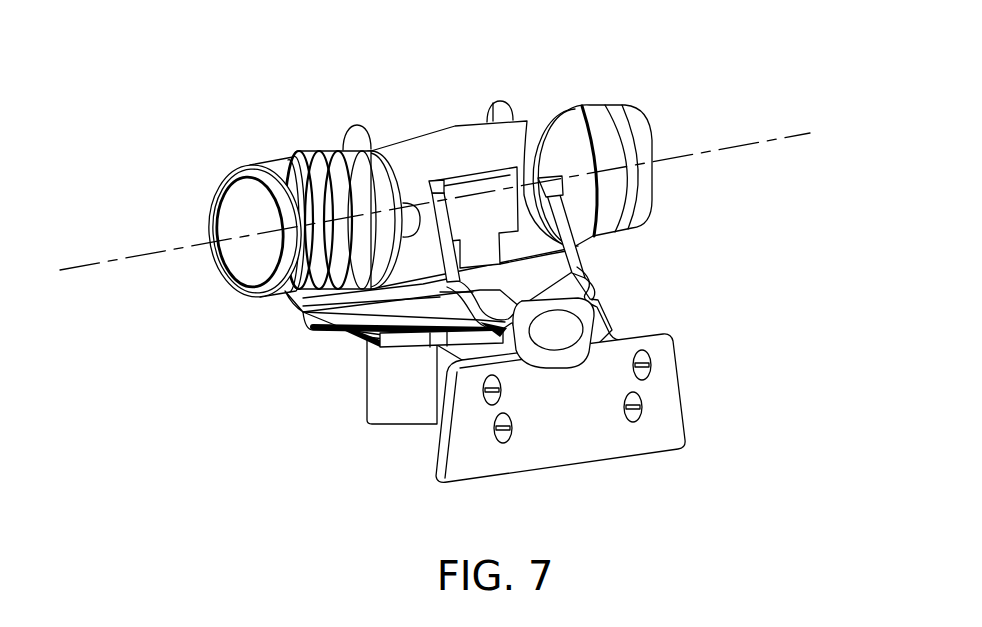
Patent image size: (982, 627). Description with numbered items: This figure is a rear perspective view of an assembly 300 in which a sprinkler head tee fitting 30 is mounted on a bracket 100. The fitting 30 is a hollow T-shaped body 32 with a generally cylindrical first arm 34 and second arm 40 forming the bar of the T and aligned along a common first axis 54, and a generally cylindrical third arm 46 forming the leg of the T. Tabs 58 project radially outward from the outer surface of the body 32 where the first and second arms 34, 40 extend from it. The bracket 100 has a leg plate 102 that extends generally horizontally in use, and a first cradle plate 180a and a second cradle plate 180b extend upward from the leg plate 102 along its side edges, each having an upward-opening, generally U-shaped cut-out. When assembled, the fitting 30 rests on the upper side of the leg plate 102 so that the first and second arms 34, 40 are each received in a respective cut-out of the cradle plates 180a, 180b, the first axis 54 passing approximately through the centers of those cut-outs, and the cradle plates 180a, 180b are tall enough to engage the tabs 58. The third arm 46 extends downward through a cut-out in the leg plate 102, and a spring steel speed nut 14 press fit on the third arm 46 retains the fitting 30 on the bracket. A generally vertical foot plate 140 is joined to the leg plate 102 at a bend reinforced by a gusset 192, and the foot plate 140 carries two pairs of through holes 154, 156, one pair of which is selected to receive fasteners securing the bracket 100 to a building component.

The assembly 300 is at (226, 57).
The sprinkler head tee fitting 30 is at (652, 74).
The first axis 54 is at (752, 143).
The second arm 40 is at (625, 138).
The T-shaped body 32 is at (429, 136).
The first arm 34 is at (304, 160).
The tabs 58 is at (354, 125).
The bracket 100 is at (691, 302).
The leg plate 102 is at (538, 253).
The first cradle plate 180a is at (600, 224).
The second cradle plate 180b is at (423, 281).
The speed nut 14 is at (300, 316).
The third arm 46 is at (402, 412).
The foot plate 140 is at (550, 426).
The gusset 192 is at (571, 331).
The through holes 156 is at (652, 366).
The through holes 154 is at (645, 404).